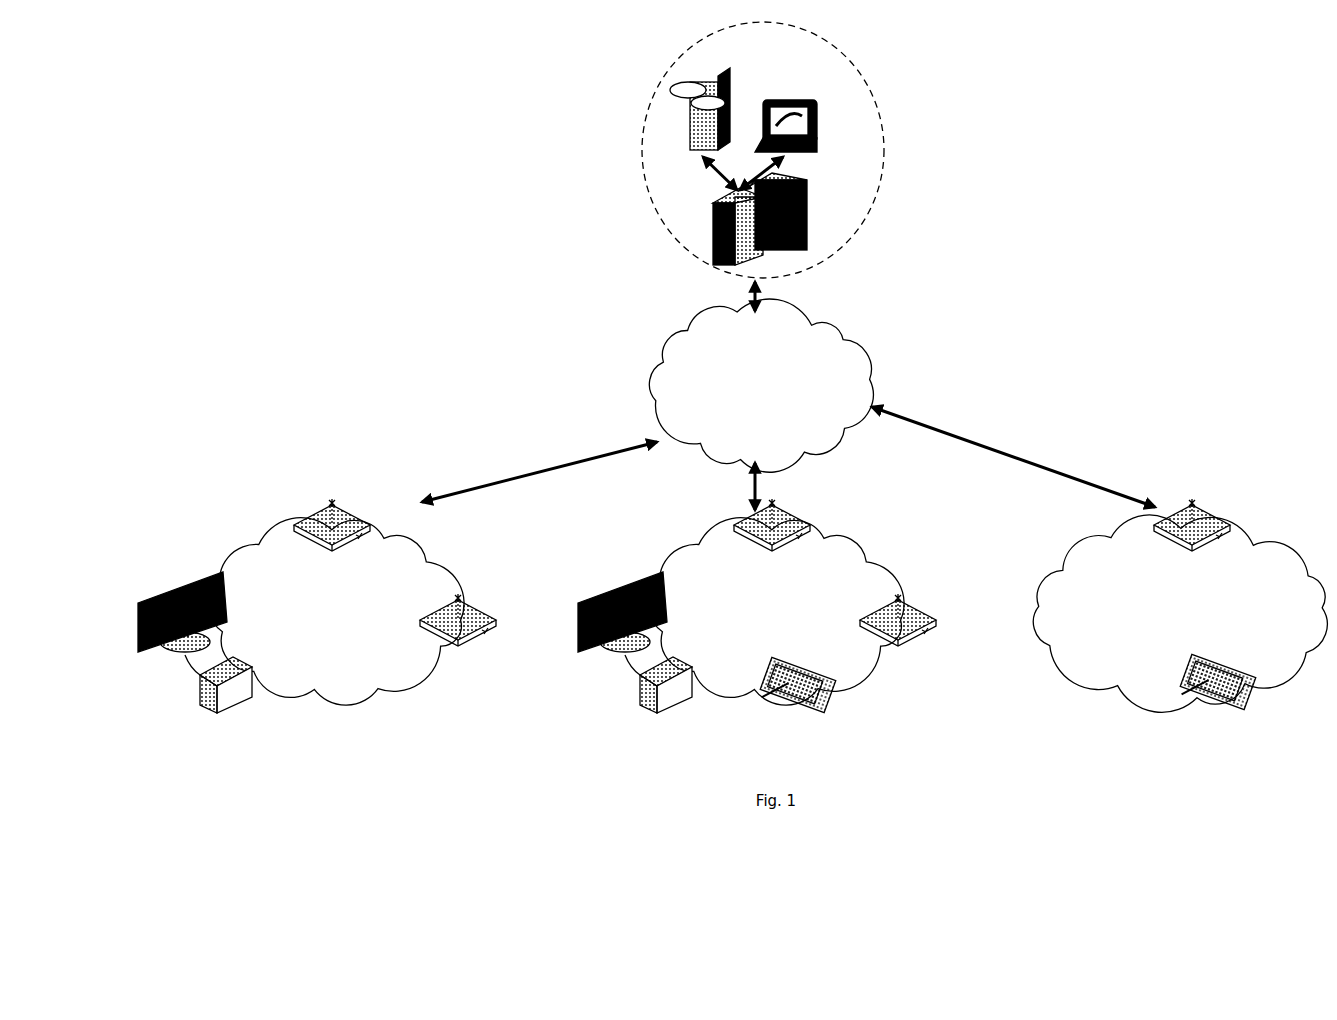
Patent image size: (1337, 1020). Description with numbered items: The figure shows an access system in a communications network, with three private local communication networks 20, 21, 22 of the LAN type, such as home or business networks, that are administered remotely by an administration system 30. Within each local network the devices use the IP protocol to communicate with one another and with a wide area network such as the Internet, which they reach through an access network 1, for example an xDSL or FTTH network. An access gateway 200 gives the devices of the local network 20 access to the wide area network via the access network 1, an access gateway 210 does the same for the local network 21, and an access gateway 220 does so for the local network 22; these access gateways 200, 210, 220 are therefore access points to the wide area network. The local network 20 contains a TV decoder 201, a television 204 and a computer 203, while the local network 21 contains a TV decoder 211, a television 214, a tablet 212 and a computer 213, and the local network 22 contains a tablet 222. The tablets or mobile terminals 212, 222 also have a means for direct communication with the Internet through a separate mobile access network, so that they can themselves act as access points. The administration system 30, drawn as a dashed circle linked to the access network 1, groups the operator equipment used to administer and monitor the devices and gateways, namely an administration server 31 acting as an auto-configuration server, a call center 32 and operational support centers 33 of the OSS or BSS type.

The access network 1 is at (653, 380).
The administration system 30 is at (873, 97).
The administration server 31 is at (807, 190).
The call center 32 is at (797, 97).
The operational support centers 33 is at (708, 70).
The local communication network 20 is at (226, 552).
The access gateway 200 is at (343, 513).
The TV decoder 201 is at (473, 607).
The computer 203 is at (235, 703).
The television 204 is at (188, 584).
The local communication network 21 is at (666, 552).
The access gateway 210 is at (783, 513).
The TV decoder 211 is at (913, 609).
The tablet 212 is at (830, 697).
The computer 213 is at (675, 709).
The television 214 is at (628, 584).
The local communication network 22 is at (1084, 552).
The access gateway 220 is at (1203, 517).
The tablet 222 is at (1248, 692).